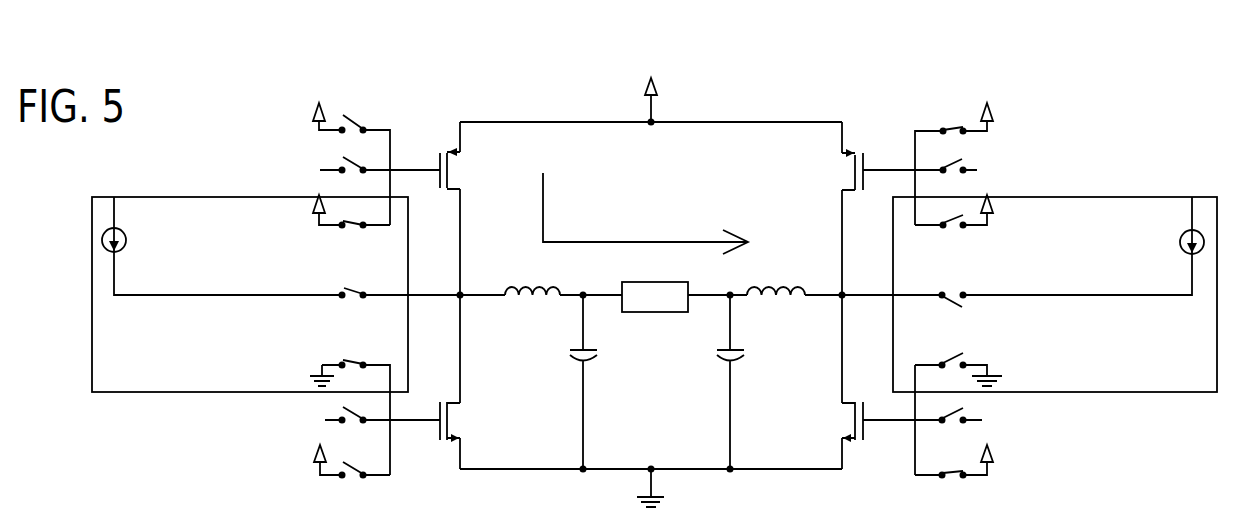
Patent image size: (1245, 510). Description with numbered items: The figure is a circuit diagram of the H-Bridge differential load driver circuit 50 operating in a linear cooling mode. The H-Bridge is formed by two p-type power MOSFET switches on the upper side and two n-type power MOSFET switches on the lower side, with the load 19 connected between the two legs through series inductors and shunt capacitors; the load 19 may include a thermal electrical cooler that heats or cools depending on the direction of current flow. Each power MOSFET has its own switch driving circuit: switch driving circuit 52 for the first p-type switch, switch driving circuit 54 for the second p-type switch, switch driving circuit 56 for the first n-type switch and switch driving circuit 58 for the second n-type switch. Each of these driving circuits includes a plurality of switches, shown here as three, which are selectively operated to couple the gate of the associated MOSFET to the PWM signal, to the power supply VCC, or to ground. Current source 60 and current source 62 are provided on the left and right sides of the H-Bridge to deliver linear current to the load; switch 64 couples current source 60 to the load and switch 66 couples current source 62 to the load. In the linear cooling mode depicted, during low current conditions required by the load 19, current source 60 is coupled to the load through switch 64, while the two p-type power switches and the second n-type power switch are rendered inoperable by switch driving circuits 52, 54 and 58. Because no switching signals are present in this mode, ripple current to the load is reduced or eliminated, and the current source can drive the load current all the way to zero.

The differential load driver circuit 50 is at (489, 102).
The switch driving circuit 52 is at (362, 106).
The switch driving circuit 54 is at (952, 108).
The switch driving circuit 56 is at (353, 481).
The switch driving circuit 58 is at (952, 482).
The current source 60 is at (124, 232).
The current source 62 is at (1180, 240).
The switch 64 is at (355, 288).
The switch 66 is at (953, 287).
The load 19 is at (662, 314).